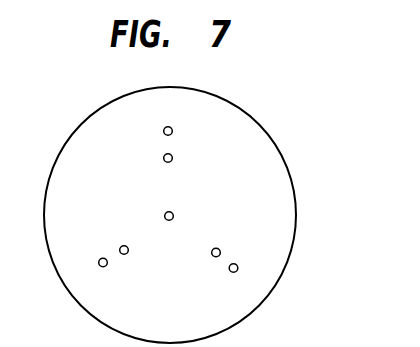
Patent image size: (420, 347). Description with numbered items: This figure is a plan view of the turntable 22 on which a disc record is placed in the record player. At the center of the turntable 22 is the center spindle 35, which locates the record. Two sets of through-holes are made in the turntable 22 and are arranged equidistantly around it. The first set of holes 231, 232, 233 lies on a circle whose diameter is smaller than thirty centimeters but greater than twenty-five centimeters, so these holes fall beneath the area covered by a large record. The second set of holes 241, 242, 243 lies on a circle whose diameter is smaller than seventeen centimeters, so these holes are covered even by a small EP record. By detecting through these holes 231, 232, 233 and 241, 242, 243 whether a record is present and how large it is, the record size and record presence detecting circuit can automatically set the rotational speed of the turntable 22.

The turntable 22 is at (282, 172).
The through-hole 231 is at (172, 131).
The through-hole 241 is at (172, 158).
The center spindle 35 is at (174, 216).
The through-hole 232 is at (100, 260).
The through-hole 242 is at (125, 254).
The through-hole 243 is at (218, 248).
The through-hole 233 is at (230, 272).